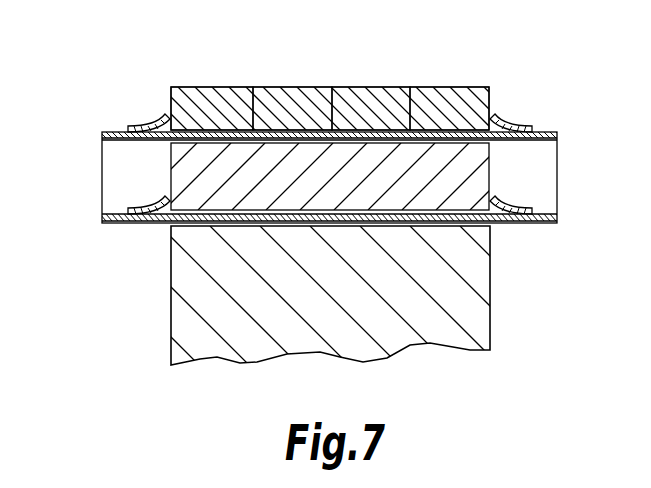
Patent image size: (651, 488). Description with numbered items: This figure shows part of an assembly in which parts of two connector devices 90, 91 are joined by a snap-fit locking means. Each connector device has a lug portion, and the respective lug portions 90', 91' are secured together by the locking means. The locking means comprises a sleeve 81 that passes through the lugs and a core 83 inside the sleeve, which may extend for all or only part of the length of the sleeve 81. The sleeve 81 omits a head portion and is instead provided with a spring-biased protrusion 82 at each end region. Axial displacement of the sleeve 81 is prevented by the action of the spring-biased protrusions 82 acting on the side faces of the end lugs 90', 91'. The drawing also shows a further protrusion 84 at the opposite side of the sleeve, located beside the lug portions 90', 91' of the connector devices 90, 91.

The sleeve 81 is at (103, 134).
The spring-biased protrusion 82 is at (157, 122).
The core 83 is at (180, 181).
The lower flange 84 is at (510, 204).
The connector device 90 is at (321, 190).
The lug portion 90' is at (290, 72).
The connector device 91 is at (330, 72).
The lug portion 91' is at (371, 72).